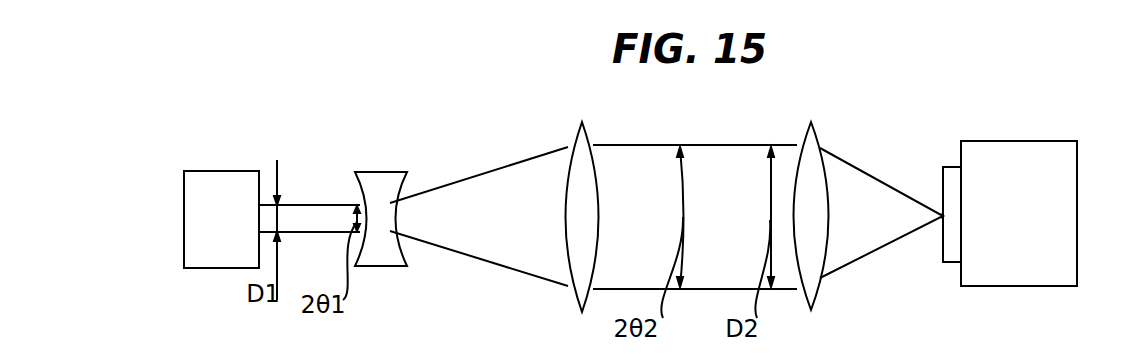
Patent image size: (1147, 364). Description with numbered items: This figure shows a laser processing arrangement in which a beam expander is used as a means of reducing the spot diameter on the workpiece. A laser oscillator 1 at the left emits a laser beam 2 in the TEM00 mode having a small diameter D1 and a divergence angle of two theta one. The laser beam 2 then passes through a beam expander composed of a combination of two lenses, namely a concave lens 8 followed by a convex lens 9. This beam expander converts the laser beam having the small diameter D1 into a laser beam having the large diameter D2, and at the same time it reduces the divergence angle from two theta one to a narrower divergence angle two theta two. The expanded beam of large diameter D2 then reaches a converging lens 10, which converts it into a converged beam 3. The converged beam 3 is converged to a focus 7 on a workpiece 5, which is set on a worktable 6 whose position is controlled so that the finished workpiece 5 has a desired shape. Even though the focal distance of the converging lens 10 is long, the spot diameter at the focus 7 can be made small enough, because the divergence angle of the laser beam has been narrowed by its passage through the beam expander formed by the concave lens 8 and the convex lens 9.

The laser oscillator 1 is at (240, 171).
The laser beam 2 is at (317, 205).
The converged beam 3 is at (870, 176).
The workpiece 5 is at (945, 167).
The worktable 6 is at (1058, 141).
The focus 7 is at (941, 218).
The concave lens 8 is at (398, 172).
The convex lens 9 is at (582, 122).
The converging lens 10 is at (811, 122).